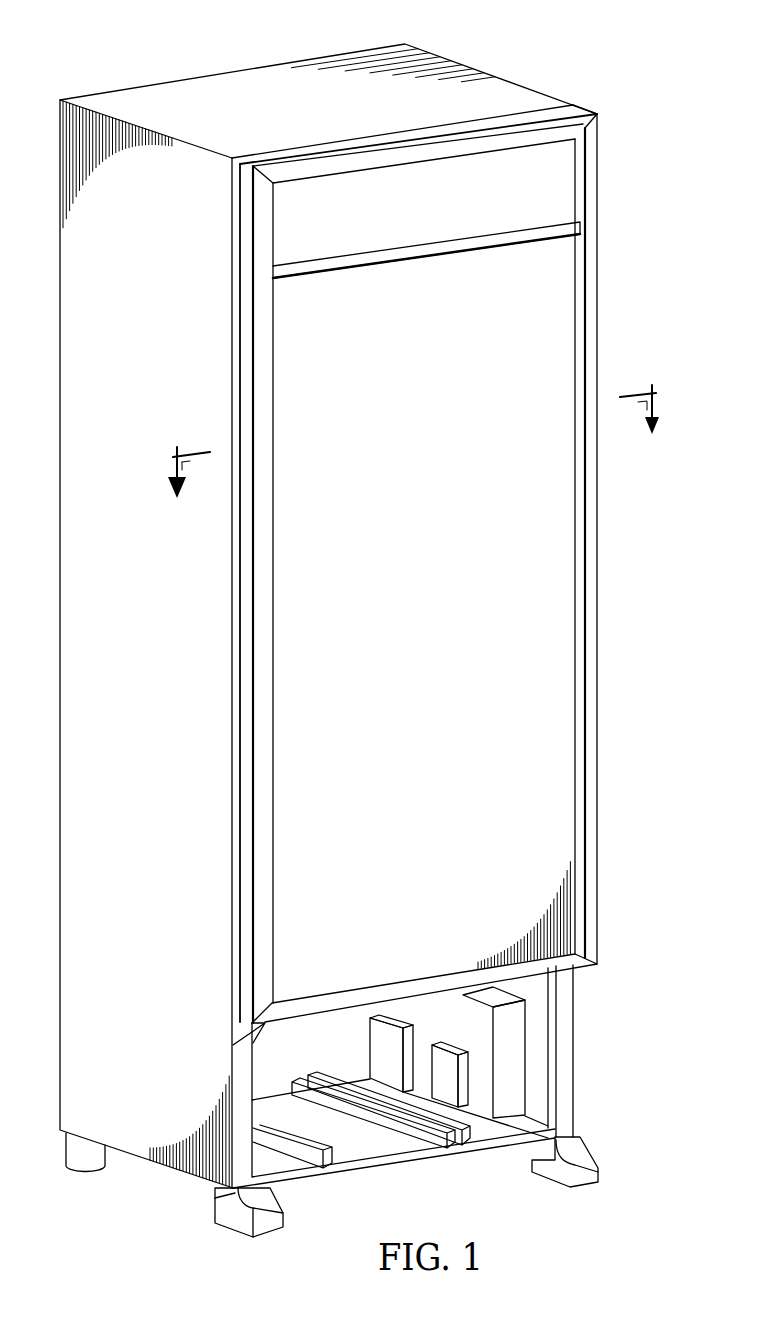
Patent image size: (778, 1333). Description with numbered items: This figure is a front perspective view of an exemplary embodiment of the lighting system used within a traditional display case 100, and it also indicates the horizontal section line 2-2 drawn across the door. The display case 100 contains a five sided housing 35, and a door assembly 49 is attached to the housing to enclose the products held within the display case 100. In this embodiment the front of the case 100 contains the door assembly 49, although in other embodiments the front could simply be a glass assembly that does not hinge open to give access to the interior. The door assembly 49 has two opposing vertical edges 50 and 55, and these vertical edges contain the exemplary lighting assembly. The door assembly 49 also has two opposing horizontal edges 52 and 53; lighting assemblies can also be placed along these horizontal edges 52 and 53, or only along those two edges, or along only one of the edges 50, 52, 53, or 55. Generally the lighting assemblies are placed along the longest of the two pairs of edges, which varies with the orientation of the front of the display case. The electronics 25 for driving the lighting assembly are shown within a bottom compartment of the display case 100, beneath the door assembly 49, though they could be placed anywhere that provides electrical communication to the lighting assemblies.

The display case 100 is at (92, 59).
The five sided housing 35 is at (488, 92).
The door assembly 49 is at (625, 274).
The vertical edge 50 is at (594, 710).
The horizontal edge 52 is at (311, 168).
The horizontal edge 53 is at (395, 992).
The vertical edge 55 is at (268, 799).
The electronics 25 is at (508, 1063).
The horizontal section line 2 is at (414, 458).